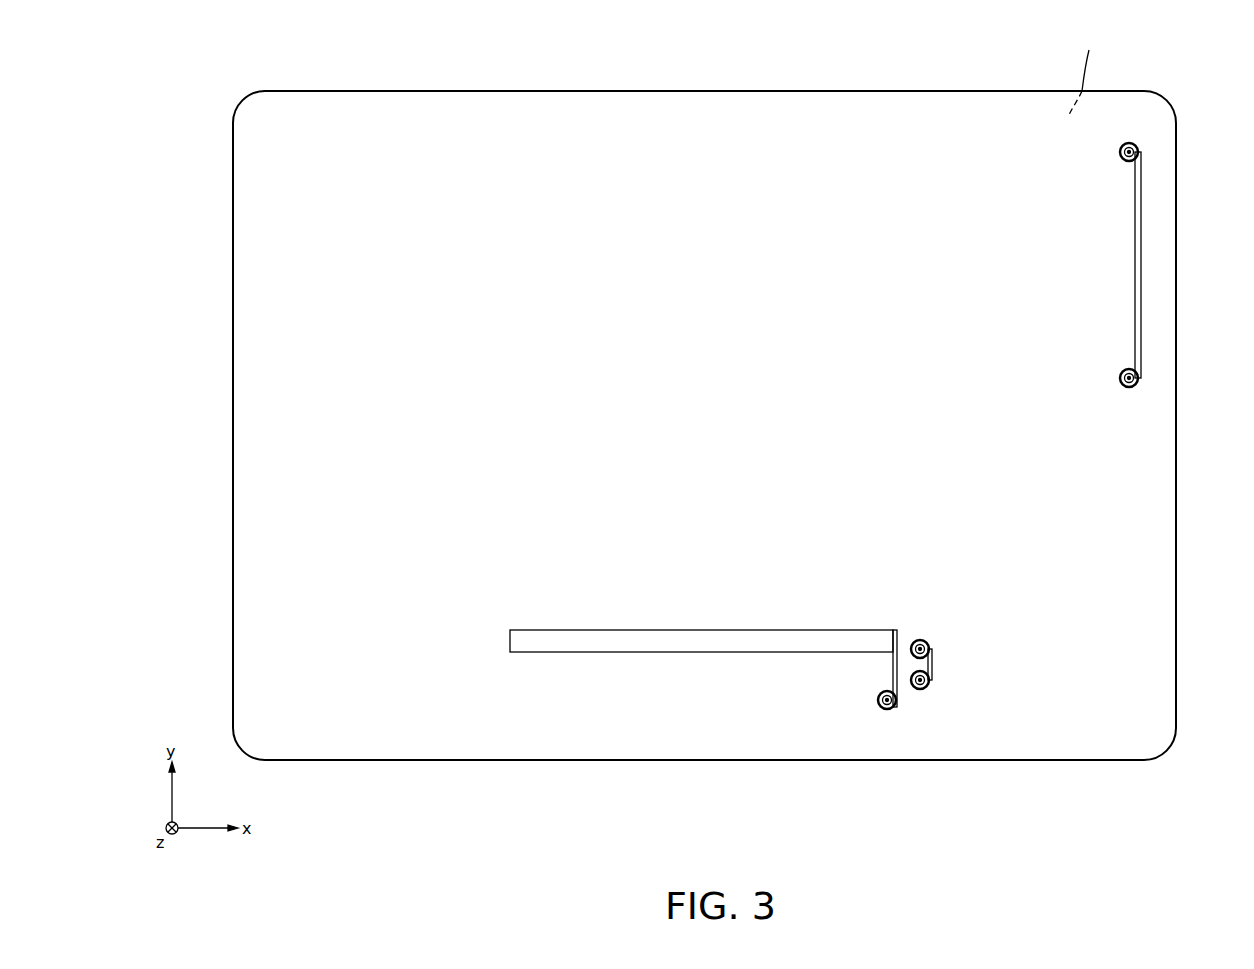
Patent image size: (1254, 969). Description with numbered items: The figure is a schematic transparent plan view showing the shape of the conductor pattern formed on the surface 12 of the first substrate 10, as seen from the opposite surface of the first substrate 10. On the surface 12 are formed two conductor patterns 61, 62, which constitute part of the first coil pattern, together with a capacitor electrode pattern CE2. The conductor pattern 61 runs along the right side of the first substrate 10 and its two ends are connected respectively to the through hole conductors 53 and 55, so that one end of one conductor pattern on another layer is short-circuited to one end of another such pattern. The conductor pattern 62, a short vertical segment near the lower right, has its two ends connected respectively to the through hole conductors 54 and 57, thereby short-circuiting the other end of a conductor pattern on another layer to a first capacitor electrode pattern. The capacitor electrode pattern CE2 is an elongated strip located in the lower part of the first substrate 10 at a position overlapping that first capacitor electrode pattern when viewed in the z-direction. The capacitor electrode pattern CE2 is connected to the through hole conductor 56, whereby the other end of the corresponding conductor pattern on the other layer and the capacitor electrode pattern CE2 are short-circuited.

The first substrate 10 is at (1176, 166).
The surface 12 is at (1088, 70).
The through hole conductor 53 is at (1138, 374).
The through hole conductor 54 is at (925, 688).
The through hole conductor 55 is at (1138, 150).
The through hole conductor 56 is at (881, 707).
The through hole conductor 57 is at (923, 640).
The conductor pattern 61 is at (1136, 238).
The conductor pattern 62 is at (932, 662).
The capacitor electrode pattern CE2 is at (510, 645).